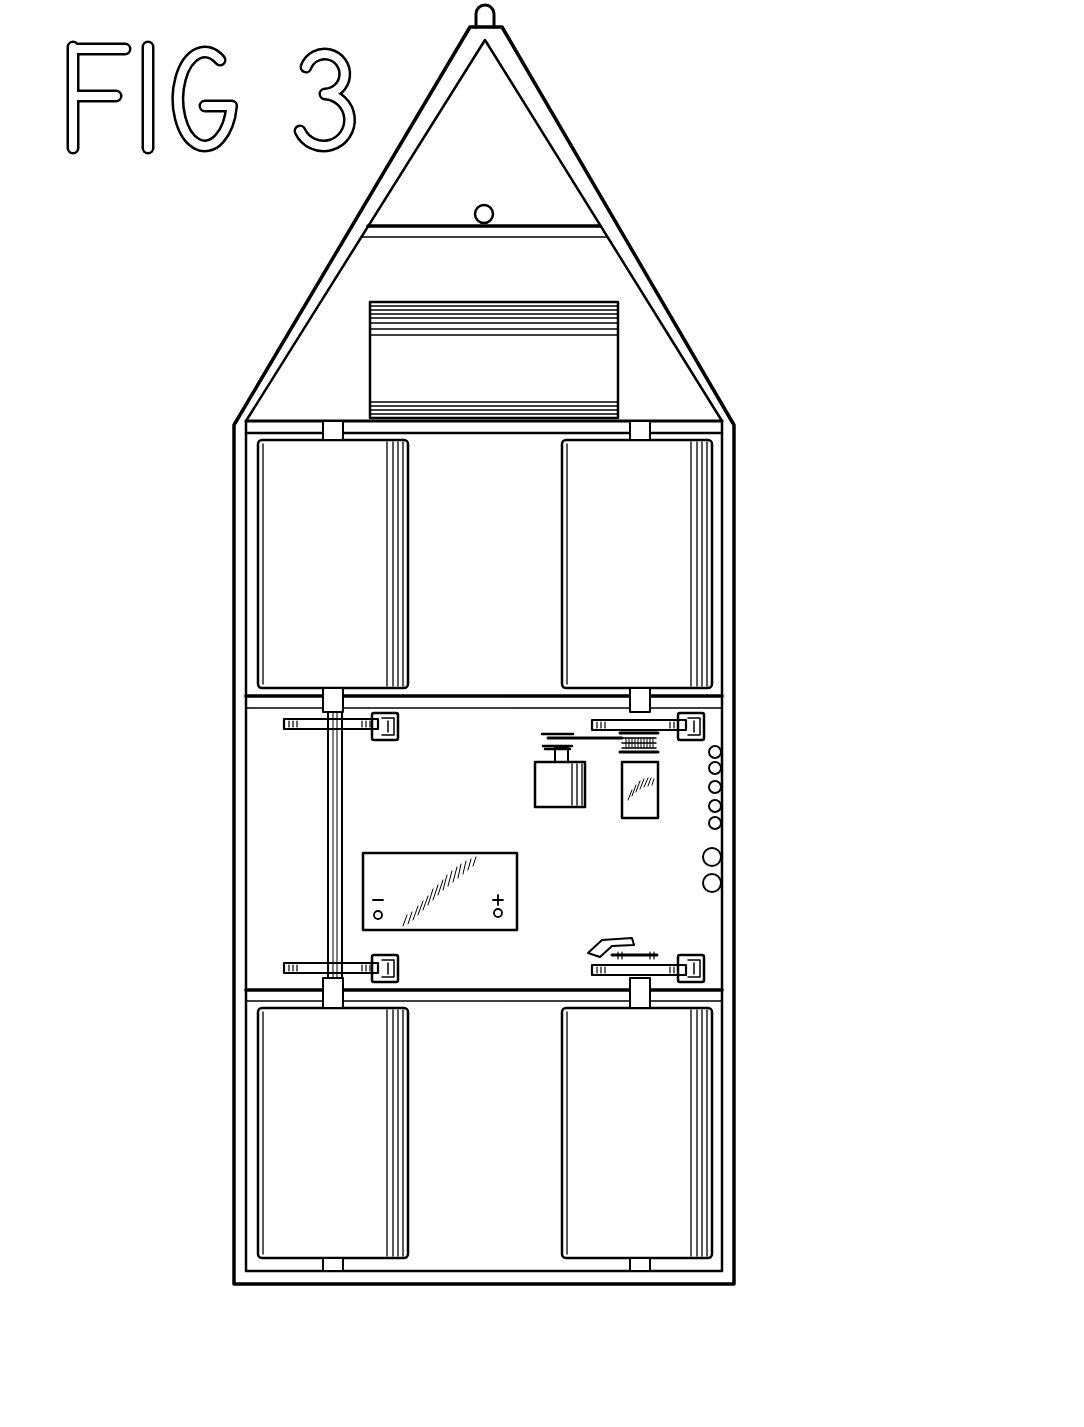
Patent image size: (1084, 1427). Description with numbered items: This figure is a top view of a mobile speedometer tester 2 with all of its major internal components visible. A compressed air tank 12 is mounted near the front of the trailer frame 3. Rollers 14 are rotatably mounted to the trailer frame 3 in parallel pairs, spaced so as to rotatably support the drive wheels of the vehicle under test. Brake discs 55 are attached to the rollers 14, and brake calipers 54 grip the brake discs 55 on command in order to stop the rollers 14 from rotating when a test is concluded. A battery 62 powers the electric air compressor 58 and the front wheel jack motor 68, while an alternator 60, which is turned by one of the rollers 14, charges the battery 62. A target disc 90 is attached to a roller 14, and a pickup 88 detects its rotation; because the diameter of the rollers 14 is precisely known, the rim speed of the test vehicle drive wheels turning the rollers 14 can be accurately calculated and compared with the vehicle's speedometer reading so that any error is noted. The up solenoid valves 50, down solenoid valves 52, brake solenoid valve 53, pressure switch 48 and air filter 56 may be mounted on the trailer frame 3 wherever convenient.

The mobile speedometer tester 2 is at (847, 177).
The trailer frame 3 is at (737, 483).
The compressed air tank 12 is at (620, 334).
The rollers 14 is at (258, 568).
The pressure switch 48 is at (722, 856).
The up solenoid valves 50 is at (722, 752).
The down solenoid valves 52 is at (722, 787).
The brake solenoid valve 53 is at (722, 826).
The brake calipers 54 is at (397, 737).
The brake discs 55 is at (284, 723).
The air filter 56 is at (722, 885).
The electric air compressor 58 is at (618, 800).
The alternator 60 is at (548, 808).
The battery 62 is at (517, 897).
The front wheel jack motor 68 is at (487, 205).
The pickup 88 is at (590, 948).
The target disc 90 is at (640, 943).